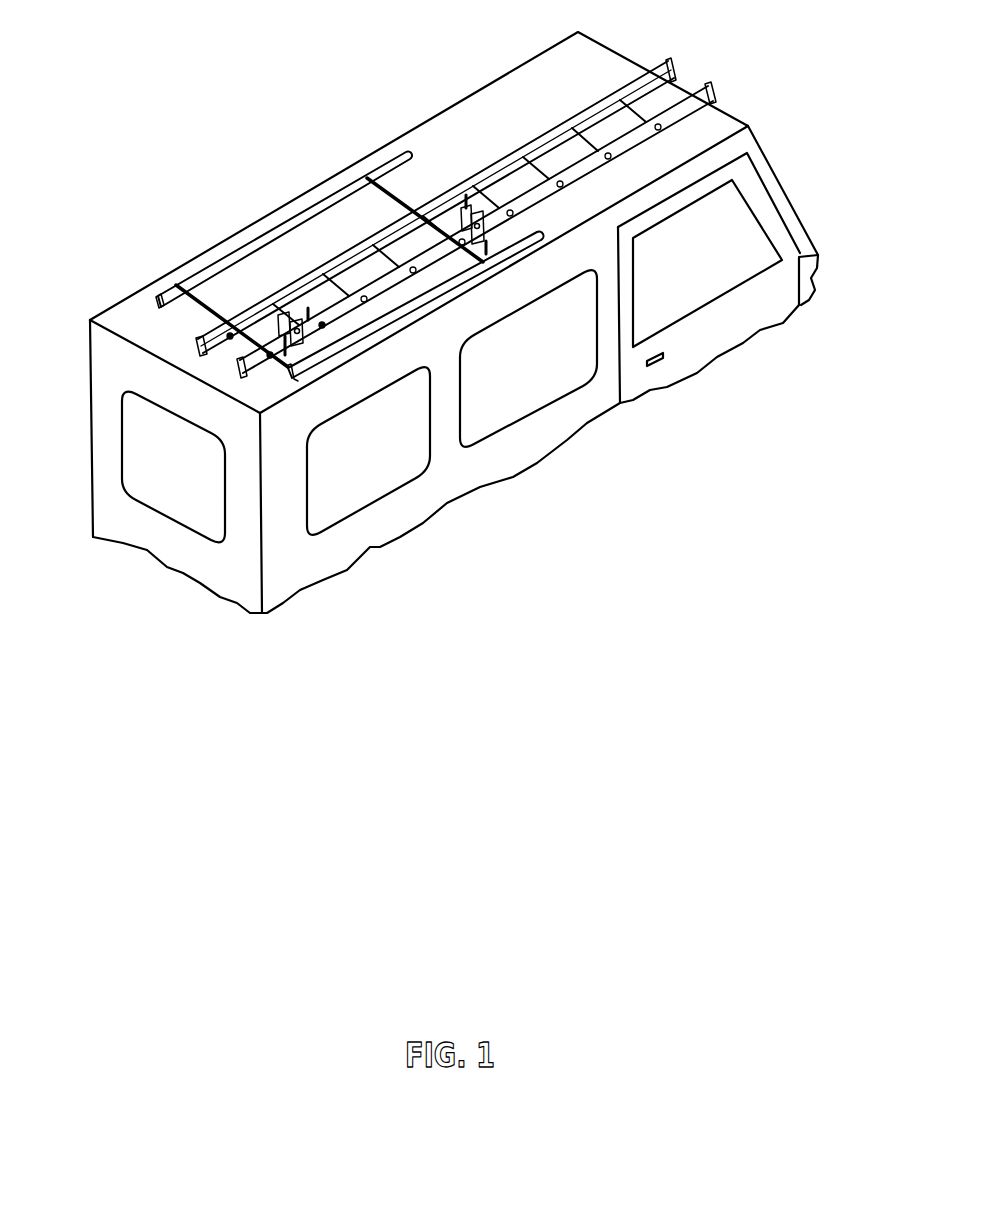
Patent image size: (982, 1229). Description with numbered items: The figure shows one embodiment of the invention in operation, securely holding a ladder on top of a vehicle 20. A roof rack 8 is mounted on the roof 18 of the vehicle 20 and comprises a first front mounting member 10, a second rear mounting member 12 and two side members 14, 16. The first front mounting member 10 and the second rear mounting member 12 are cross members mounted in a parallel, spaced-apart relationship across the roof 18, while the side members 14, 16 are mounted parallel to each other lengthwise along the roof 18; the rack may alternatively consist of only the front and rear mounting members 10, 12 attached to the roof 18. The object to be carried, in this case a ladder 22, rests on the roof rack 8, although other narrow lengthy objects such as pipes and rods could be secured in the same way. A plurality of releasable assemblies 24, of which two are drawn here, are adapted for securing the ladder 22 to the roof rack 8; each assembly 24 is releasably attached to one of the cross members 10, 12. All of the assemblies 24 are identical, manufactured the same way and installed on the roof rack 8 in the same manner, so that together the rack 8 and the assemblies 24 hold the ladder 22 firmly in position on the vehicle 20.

The roof rack 8 is at (212, 298).
The first front mounting member 10 is at (510, 218).
The second rear mounting member 12 is at (178, 302).
The side member 14 is at (268, 232).
The side member 16 is at (466, 218).
The roof 18 is at (577, 57).
The vehicle 20 is at (695, 345).
The ladder 22 is at (712, 88).
The releasable assembly 24 is at (298, 345).